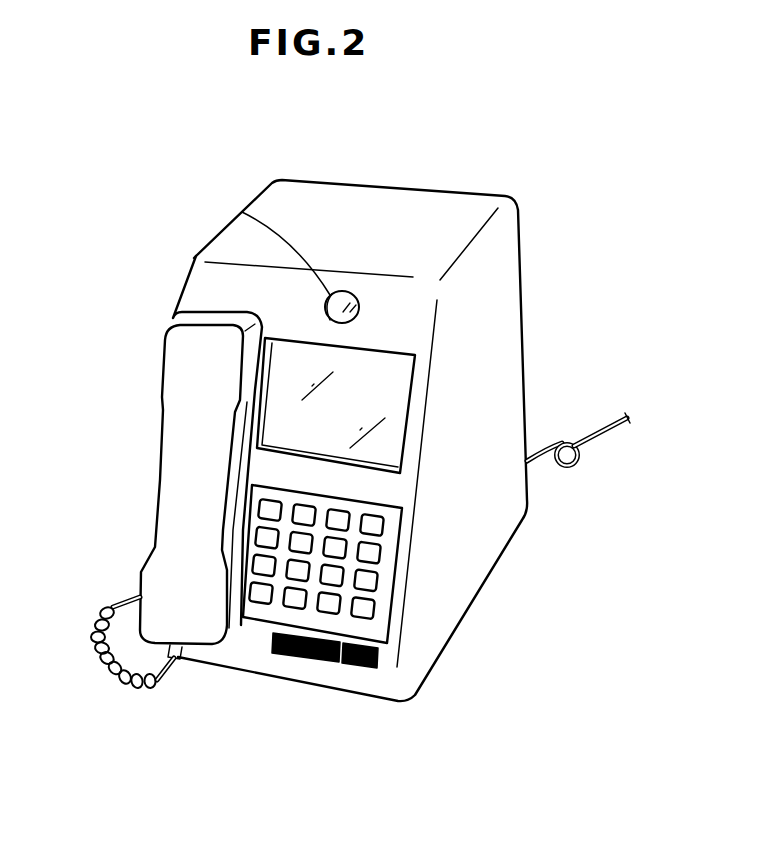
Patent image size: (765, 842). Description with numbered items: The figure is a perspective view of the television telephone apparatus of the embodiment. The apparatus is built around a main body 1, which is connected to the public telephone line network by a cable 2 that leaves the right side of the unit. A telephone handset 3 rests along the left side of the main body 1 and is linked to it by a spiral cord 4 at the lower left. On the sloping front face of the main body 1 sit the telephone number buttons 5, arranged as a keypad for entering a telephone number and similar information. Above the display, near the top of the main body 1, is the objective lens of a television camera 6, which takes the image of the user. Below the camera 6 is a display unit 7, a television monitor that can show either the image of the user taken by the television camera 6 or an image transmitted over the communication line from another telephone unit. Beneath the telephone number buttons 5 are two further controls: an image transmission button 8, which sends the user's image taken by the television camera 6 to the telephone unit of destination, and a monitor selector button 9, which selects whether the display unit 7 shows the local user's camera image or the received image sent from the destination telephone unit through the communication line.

The main body 1 is at (441, 192).
The cable 2 is at (594, 427).
The telephone handset 3 is at (168, 490).
The spiral cord 4 is at (92, 655).
The telephone number buttons 5 is at (393, 570).
The television camera 6 is at (242, 213).
The display unit 7 is at (397, 395).
The image transmission button 8 is at (290, 660).
The monitor selector button 9 is at (365, 667).